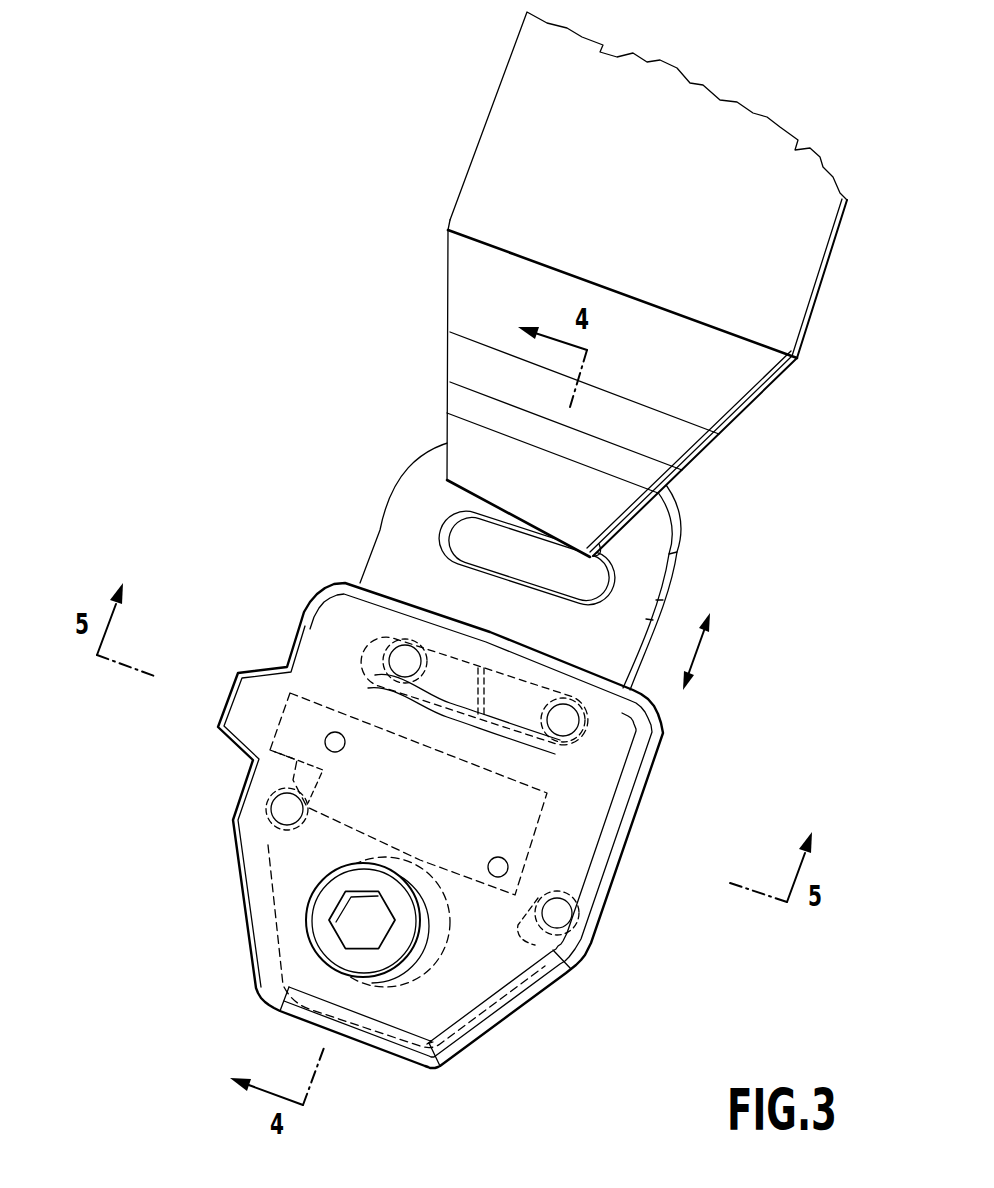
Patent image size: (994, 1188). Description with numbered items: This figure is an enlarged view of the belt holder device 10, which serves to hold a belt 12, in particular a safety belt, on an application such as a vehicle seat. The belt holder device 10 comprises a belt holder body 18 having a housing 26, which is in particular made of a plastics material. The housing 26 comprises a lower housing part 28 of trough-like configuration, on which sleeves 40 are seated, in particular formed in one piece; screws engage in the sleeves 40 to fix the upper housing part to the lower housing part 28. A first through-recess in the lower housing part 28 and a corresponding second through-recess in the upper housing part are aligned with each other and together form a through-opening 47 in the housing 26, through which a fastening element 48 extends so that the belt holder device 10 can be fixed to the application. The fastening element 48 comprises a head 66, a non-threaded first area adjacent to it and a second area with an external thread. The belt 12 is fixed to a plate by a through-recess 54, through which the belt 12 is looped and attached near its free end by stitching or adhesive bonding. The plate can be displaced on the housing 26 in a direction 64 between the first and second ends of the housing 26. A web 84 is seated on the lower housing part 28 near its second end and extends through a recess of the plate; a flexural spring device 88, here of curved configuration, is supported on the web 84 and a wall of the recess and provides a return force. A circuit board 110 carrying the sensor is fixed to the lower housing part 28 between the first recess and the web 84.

The belt holder device 10 is at (592, 1008).
The belt 12 is at (725, 377).
The belt holder body 18 is at (630, 810).
The housing 26 is at (492, 1035).
The lower housing part 28 is at (260, 847).
The sleeves 40 is at (390, 648).
The through-opening 47 is at (427, 973).
The fastening element 48 is at (317, 912).
The through-recess 54 is at (585, 580).
The direction 64 is at (700, 653).
The head 66 is at (337, 953).
The web 84 is at (580, 706).
The flexural spring device 88 is at (557, 757).
The circuit board 110 is at (532, 818).